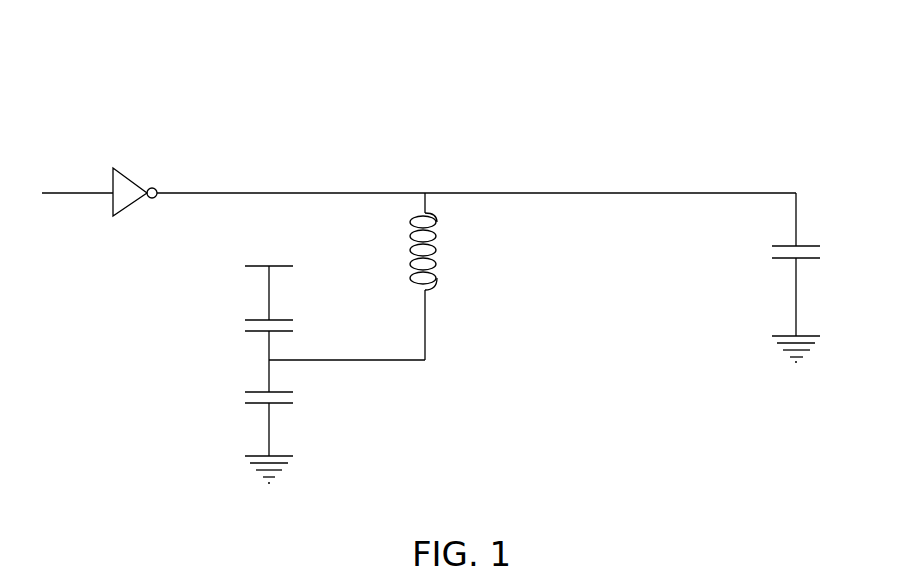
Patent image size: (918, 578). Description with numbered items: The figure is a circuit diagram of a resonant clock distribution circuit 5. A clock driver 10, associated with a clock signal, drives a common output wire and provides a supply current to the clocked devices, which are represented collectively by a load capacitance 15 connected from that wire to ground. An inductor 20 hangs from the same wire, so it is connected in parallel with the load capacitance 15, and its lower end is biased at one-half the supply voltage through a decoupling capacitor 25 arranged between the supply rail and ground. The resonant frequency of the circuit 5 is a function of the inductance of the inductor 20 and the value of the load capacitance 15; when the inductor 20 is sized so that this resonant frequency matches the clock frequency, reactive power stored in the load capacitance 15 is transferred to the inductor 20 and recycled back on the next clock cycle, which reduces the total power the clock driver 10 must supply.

The resonant clock distribution circuit 5 is at (724, 88).
The clock driver 10 is at (115, 165).
The load capacitance 15 is at (758, 258).
The inductor 20 is at (443, 258).
The decoupling capacitor 25 is at (223, 336).